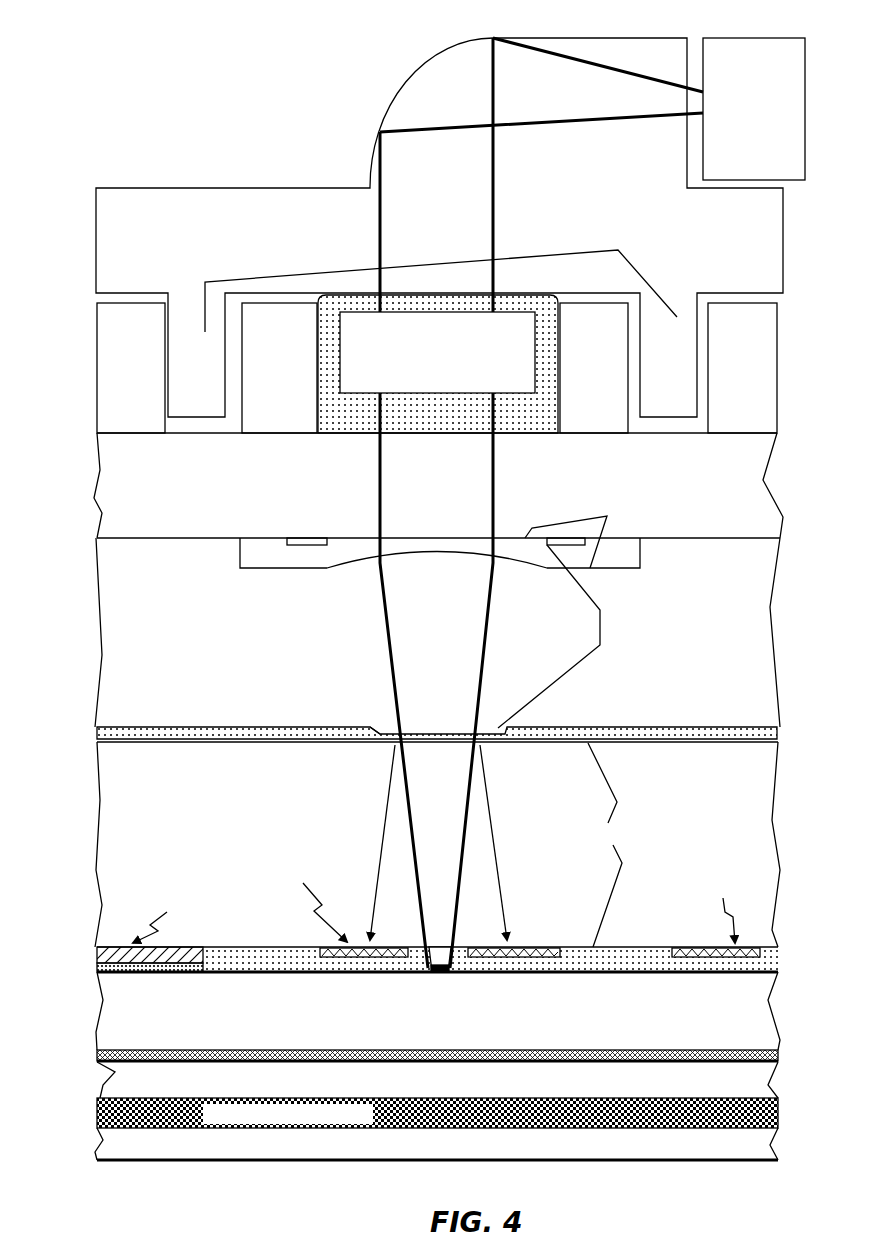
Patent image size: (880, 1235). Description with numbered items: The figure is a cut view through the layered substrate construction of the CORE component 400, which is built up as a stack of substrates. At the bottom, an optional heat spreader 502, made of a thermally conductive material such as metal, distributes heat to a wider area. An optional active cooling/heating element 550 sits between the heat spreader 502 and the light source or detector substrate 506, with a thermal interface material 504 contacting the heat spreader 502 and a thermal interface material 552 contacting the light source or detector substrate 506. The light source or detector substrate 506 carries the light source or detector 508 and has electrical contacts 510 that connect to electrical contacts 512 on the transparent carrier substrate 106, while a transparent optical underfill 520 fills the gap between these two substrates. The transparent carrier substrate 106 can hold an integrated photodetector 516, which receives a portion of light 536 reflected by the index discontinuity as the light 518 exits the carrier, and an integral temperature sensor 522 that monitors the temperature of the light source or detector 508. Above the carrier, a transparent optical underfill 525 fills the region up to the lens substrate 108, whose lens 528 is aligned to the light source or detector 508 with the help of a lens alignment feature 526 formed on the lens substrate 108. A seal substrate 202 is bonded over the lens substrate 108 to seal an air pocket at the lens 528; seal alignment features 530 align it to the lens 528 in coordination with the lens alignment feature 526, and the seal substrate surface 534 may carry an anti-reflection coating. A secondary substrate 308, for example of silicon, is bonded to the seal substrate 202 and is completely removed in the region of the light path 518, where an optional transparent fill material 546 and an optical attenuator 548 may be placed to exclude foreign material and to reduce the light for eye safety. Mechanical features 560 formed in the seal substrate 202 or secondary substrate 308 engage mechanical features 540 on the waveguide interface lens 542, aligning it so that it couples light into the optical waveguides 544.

The CORE component 400 is at (213, 80).
The optical waveguides 544 is at (755, 38).
The waveguide interface lens 542 is at (240, 188).
The mechanical feature 540 is at (190, 302).
The optical attenuator 548 is at (445, 320).
The transparent fill material 546 is at (438, 373).
The secondary substrate 308 is at (97, 354).
The mechanical feature 560 is at (183, 423).
The seal substrate 202 is at (783, 522).
The lens substrate 108 is at (412, 610).
The lens 528 is at (437, 556).
The surface of the seal substrate 534 is at (270, 538).
The seal alignment feature 530 is at (550, 548).
The transparent optical underfill 525 is at (408, 722).
The lens alignment feature 526 is at (385, 728).
The transparent carrier substrate 106 is at (411, 844).
The portion of light 536 is at (390, 808).
The electrical contacts 510 is at (435, 941).
The electrical contacts 512 is at (97, 947).
The integrated photodetector 516 is at (330, 947).
The light path 518 is at (462, 896).
The integral temperature sensor 522 is at (682, 947).
The light source or detector 508 is at (452, 968).
The transparent optical underfill 520 is at (778, 962).
The light source or detector substrate 506 is at (100, 1030).
The thermal interface material 552 is at (778, 1063).
The active cooling/heating element 550 is at (104, 1083).
The thermal interface material 504 is at (100, 1114).
The heat spreader 502 is at (100, 1148).